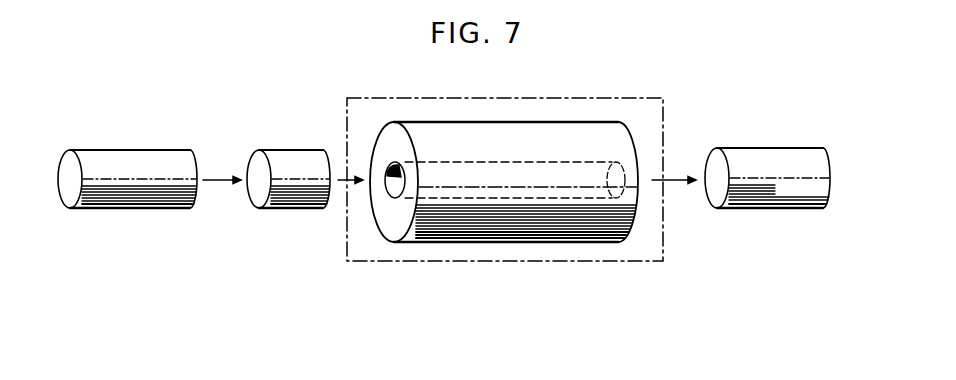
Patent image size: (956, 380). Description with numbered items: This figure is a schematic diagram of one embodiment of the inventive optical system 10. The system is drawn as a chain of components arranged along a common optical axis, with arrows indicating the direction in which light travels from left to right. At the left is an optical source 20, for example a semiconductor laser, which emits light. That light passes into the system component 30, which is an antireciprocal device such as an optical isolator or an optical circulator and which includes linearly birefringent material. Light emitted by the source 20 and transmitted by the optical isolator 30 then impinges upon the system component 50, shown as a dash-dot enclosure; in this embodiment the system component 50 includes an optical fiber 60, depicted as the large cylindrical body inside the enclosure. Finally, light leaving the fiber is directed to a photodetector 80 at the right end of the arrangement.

The optical system 10 is at (348, 75).
The optical source 20 is at (140, 155).
The system component 30 is at (287, 153).
The system component 50 is at (527, 257).
The optical fiber 60 is at (378, 218).
The photodetector 80 is at (775, 150).